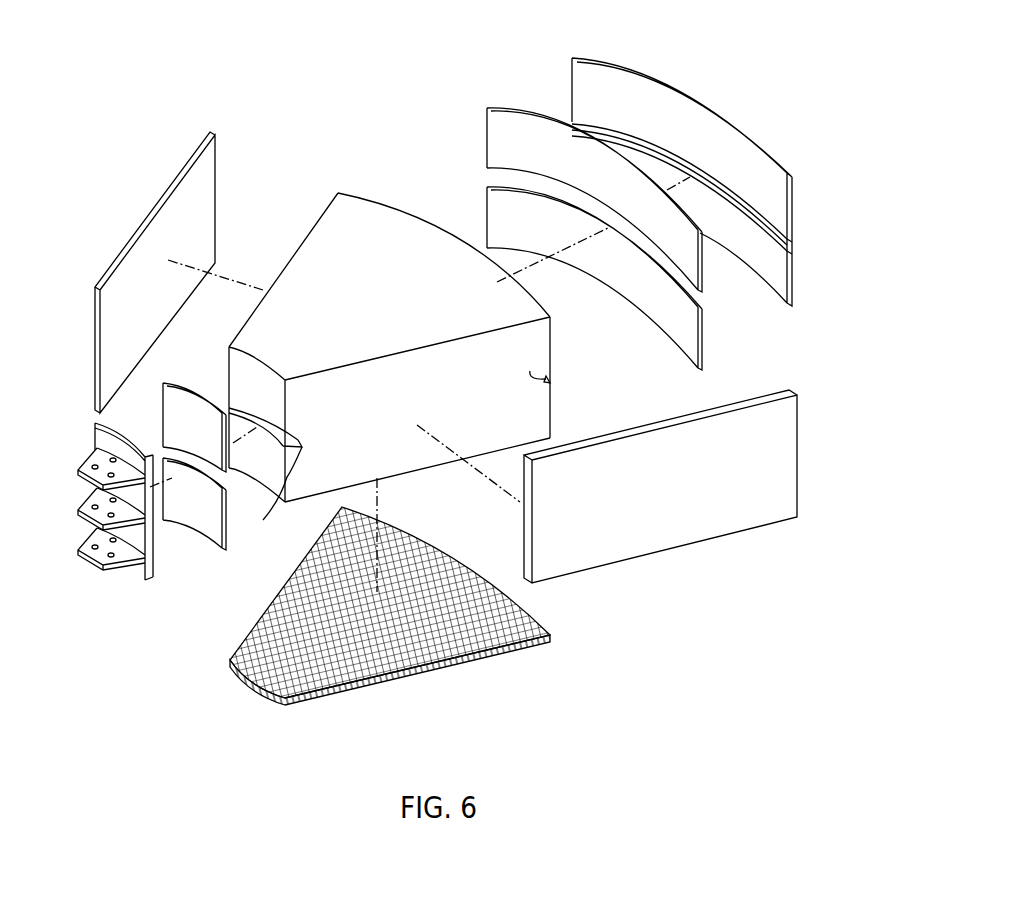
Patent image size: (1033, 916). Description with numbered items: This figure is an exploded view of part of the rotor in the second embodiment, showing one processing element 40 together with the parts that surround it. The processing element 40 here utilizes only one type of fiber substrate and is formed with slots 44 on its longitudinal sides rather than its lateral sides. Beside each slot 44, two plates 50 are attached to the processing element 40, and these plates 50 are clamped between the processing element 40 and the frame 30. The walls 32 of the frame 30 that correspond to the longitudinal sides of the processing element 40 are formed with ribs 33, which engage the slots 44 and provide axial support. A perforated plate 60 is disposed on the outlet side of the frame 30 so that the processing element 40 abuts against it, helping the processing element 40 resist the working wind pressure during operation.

The frame 30 is at (682, 175).
The walls 32 is at (665, 112).
The ribs 33 is at (760, 222).
The processing element 40 is at (330, 223).
The slots 44 is at (530, 372).
The plates 50 is at (487, 127).
The perforated plate 60 is at (447, 640).